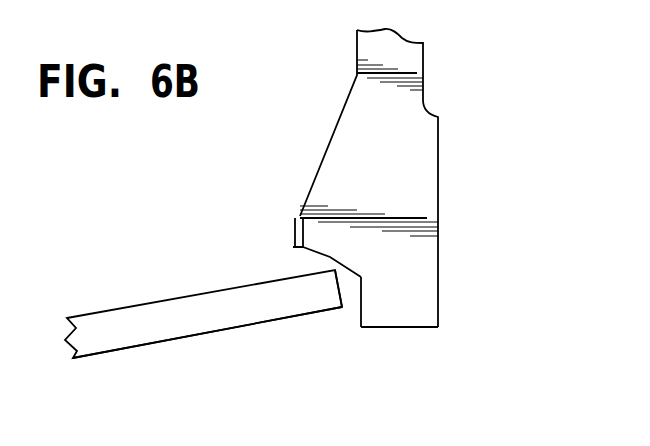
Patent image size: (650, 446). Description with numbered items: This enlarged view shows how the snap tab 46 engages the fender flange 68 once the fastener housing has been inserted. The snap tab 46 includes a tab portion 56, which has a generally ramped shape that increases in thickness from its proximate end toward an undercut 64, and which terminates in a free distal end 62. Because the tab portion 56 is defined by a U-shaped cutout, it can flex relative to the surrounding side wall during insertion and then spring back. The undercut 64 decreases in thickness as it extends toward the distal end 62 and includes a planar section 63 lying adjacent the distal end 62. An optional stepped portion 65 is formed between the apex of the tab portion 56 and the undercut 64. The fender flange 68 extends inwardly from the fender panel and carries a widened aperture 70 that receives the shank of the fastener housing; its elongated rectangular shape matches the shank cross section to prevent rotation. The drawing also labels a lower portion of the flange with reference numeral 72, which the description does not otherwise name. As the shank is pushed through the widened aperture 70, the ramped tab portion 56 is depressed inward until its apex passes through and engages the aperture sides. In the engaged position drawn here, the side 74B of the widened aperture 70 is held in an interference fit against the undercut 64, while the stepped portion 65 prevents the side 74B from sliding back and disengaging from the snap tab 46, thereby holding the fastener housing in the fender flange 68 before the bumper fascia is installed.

The snap tab 46 is at (290, 162).
The tab portion 56 is at (412, 153).
The stepped portion 65 is at (300, 213).
The undercut 64 is at (330, 257).
The planar section 63 is at (363, 310).
The distal end 62 is at (413, 328).
The widened aperture 70 is at (352, 307).
The fender flange 68 is at (142, 323).
The side of the widened aperture 74B is at (335, 290).
The lower edge of arm 72 is at (135, 347).